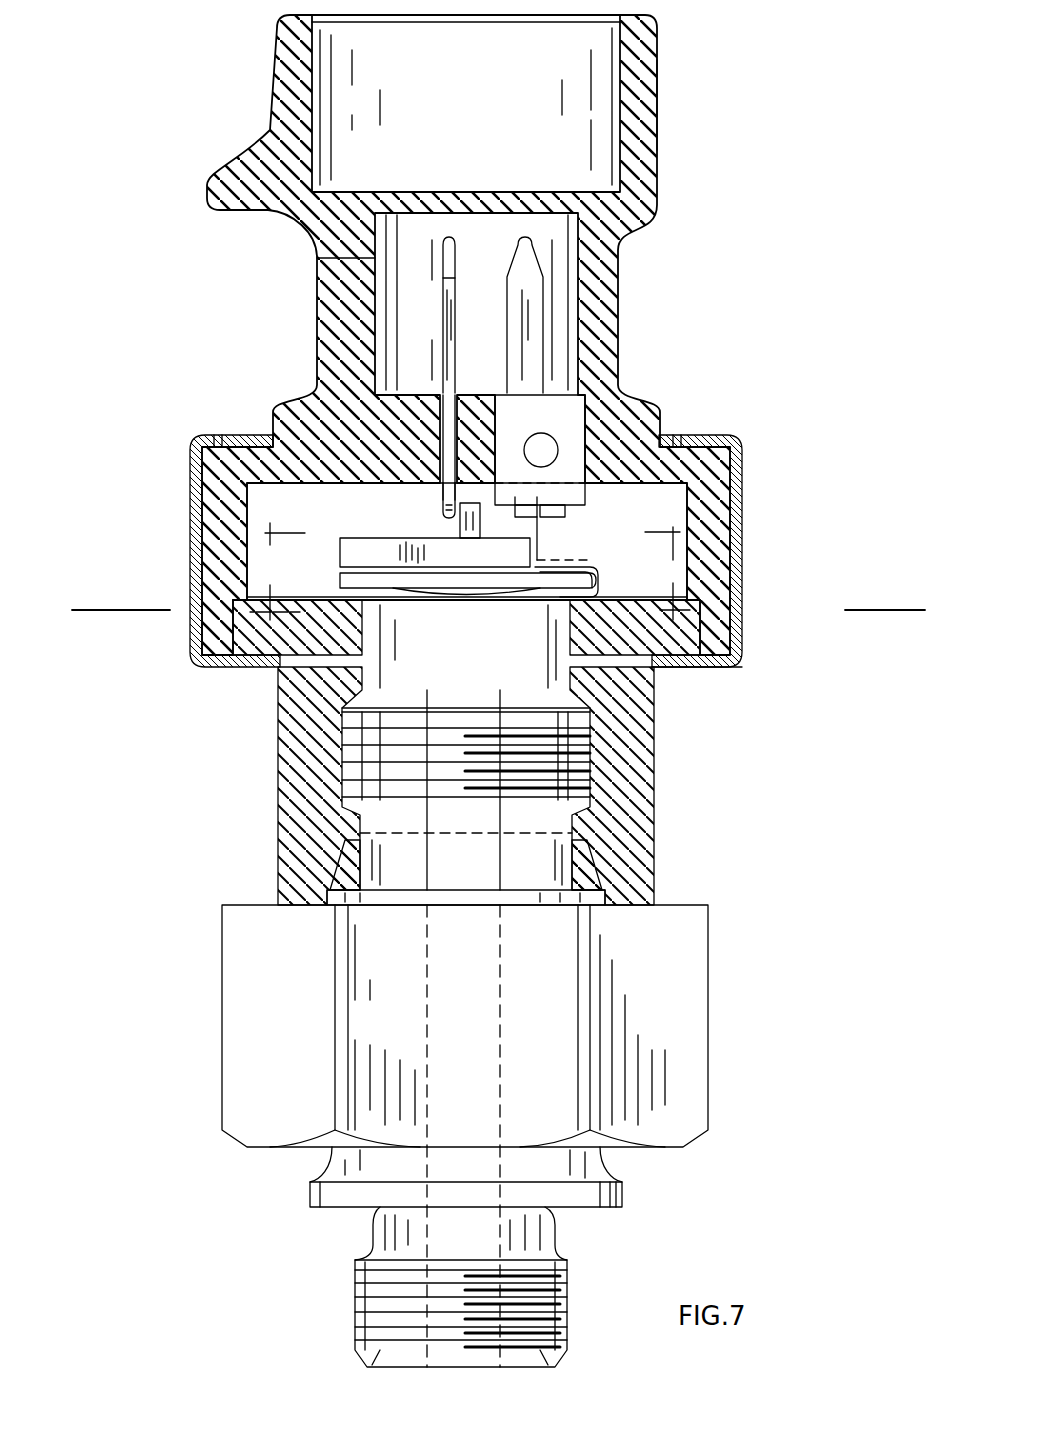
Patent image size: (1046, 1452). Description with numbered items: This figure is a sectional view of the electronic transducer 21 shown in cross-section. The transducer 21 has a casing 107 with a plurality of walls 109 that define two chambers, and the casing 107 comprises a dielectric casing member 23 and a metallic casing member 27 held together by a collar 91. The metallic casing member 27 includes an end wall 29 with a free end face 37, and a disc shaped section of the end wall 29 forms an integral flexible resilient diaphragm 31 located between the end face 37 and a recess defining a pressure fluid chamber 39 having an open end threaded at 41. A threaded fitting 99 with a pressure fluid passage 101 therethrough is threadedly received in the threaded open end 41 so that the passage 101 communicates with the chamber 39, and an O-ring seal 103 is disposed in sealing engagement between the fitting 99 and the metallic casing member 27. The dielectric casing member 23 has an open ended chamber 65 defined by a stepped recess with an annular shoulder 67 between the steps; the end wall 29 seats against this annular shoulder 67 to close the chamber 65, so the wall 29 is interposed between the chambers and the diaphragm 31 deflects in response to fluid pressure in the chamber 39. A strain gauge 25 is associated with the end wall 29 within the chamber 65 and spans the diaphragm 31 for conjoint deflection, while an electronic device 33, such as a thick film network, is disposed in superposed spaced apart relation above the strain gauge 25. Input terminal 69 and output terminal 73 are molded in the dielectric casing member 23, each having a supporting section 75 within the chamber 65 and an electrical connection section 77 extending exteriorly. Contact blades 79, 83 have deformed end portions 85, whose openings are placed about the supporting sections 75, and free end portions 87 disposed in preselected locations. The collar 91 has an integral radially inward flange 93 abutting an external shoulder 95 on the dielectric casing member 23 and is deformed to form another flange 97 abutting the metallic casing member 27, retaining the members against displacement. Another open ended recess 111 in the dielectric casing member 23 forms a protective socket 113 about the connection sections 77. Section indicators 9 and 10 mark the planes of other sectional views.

The section line 9- 9 is at (97, 610).
The section line 10- 10 is at (80, 600).
The electronic transducer 21 is at (196, 790).
The dielectric casing member 23 is at (750, 252).
The strain gauge 25 is at (295, 586).
The metallic casing member 27 is at (738, 818).
The end wall 29 is at (232, 628).
The diaphragm 31 is at (440, 603).
The electronic device 33 is at (652, 579).
The free end face 37 is at (250, 590).
The chamber 39 is at (388, 665).
The threaded open end 41 is at (592, 768).
The chamber 65 is at (675, 495).
The annular shoulder 67 is at (700, 631).
The input terminal 69 is at (447, 236).
The output terminal 73 is at (525, 236).
The supporting section 75 is at (443, 482).
The electrical connection section 77 is at (505, 308).
The contact blade 79 is at (443, 527).
The contact blade 83 is at (592, 522).
The end portion 85 is at (442, 500).
The free end portion 87 is at (590, 557).
The collar 91 is at (190, 462).
The flange 93 is at (214, 435).
The external shoulder 95 is at (673, 435).
The flange 97 is at (700, 668).
The threaded fitting 99 is at (237, 1027).
The pressure fluid passage 101 is at (427, 990).
The O-ring seal 103 is at (585, 870).
The casing 107 is at (296, 316).
The walls 109 is at (686, 356).
The open ended recess 111 is at (355, 258).
The protective socket 113 is at (645, 172).